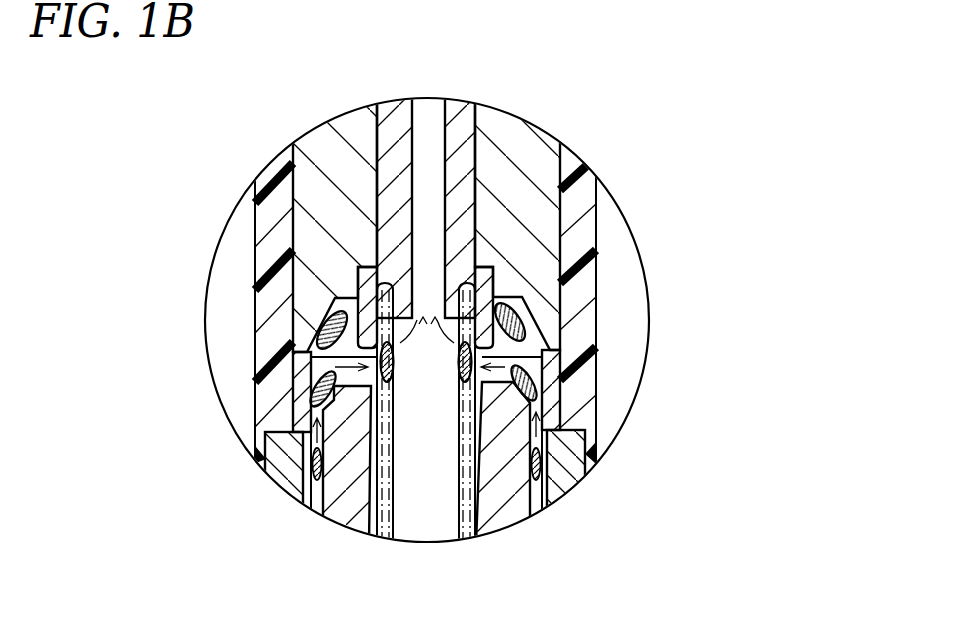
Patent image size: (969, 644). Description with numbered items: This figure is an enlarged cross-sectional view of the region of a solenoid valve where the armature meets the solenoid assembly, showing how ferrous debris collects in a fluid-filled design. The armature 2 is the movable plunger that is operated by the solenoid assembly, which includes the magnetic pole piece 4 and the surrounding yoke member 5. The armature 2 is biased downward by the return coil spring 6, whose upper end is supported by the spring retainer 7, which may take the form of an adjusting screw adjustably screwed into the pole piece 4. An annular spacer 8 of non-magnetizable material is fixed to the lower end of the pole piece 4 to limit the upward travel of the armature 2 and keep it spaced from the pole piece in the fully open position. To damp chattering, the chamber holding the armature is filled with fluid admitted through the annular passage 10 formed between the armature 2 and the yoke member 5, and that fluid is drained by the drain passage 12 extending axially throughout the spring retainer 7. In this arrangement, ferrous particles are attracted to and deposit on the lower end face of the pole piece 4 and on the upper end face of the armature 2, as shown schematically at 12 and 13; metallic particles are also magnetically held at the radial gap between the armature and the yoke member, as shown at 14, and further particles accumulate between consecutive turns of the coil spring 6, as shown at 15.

The armature 2 is at (507, 510).
The magnetic pole piece 4 is at (537, 150).
The yoke member 5 is at (560, 475).
The return coil spring 6 is at (462, 513).
The spring retainer 7 is at (462, 108).
The annular spacer 8 is at (548, 332).
The annular passage 10 is at (318, 498).
The drain passage / ferrous particles 12 is at (421, 118).
The ferrous particles 13 is at (535, 388).
The metallic particles 14 is at (316, 455).
The particles 15 is at (538, 350).